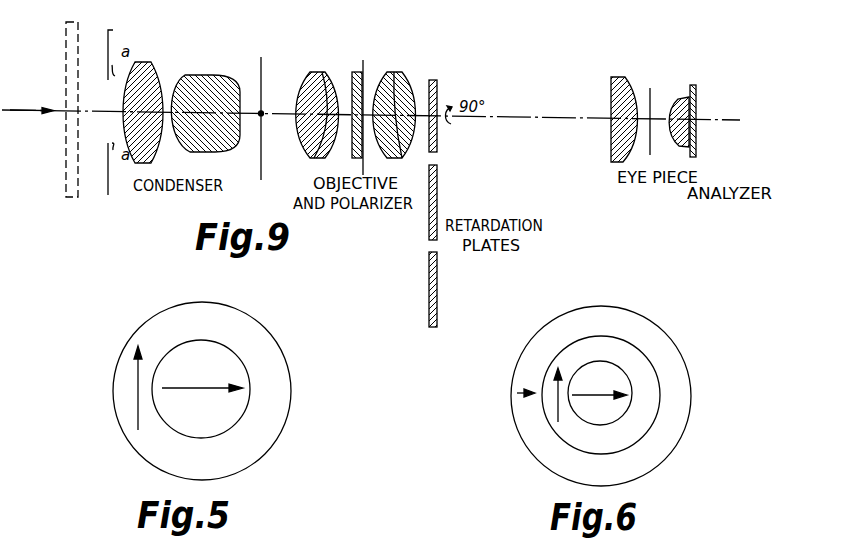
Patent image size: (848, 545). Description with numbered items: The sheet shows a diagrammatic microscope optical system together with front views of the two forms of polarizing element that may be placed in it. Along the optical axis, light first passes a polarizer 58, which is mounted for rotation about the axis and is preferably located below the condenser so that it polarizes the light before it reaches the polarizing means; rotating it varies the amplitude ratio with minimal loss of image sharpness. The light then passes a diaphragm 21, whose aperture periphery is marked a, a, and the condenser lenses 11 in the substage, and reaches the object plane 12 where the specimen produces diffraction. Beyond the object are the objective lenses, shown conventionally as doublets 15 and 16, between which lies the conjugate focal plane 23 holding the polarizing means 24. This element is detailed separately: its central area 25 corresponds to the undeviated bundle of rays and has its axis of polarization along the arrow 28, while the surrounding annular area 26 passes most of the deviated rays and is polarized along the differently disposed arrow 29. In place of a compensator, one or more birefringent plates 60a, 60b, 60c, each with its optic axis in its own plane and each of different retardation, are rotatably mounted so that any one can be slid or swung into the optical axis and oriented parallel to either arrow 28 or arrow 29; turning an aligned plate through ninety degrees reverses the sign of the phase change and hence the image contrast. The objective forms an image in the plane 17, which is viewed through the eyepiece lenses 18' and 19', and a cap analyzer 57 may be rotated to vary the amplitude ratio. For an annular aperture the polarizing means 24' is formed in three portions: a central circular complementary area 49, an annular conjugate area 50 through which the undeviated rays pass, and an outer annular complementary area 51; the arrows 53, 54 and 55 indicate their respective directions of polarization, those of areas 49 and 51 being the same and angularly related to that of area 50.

In FIG. 9, the polarizer 58 is at (65, 30).
In FIG. 9, the diaphragm 21 is at (113, 30).
In FIG. 9, the condenser lenses 11 is at (190, 78).
In FIG. 9, the object plane 12 is at (261, 58).
In FIG. 9, the doublet 15 is at (318, 72).
In FIG. 9, the polarizing means 24 is at (362, 97).
In FIG. 5, the polarizing means 24 is at (213, 391).
In FIG. 9, the plane 23 is at (362, 170).
In FIG. 9, the doublet 16 is at (398, 72).
In FIG. 9, the birefringent plate 60a is at (437, 83).
In FIG. 9, the birefringent plate 60b is at (437, 193).
In FIG. 9, the birefringent plate 60c is at (437, 297).
In FIG. 9, the eyepiece lens 18' is at (629, 105).
In FIG. 9, the image plane 17 is at (650, 88).
In FIG. 9, the eyepiece lens 19' is at (682, 105).
In FIG. 9, the cap analyzer 57 is at (697, 92).
In FIG. 5, the central area 25 is at (210, 355).
In FIG. 5, the surrounding area 26 is at (177, 306).
In FIG. 5, the arrow 28 is at (184, 391).
In FIG. 5, the arrow 29 is at (137, 393).
In FIG. 6, the polarizing means 24' is at (615, 396).
In FIG. 6, the central portion 49 is at (612, 368).
In FIG. 6, the annular conjugate area 50 is at (636, 364).
In FIG. 6, the annular complementary area 51 is at (677, 372).
In FIG. 6, the arrow 53 is at (592, 394).
In FIG. 6, the arrow 54 is at (559, 401).
In FIG. 6, the arrow 55 is at (519, 394).